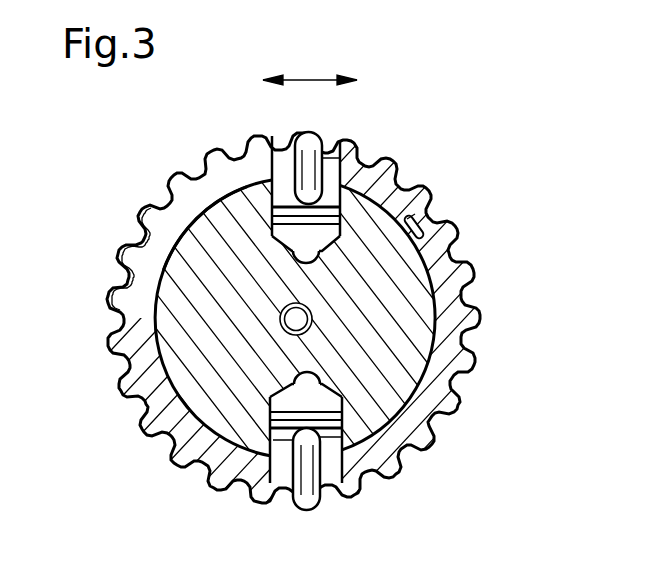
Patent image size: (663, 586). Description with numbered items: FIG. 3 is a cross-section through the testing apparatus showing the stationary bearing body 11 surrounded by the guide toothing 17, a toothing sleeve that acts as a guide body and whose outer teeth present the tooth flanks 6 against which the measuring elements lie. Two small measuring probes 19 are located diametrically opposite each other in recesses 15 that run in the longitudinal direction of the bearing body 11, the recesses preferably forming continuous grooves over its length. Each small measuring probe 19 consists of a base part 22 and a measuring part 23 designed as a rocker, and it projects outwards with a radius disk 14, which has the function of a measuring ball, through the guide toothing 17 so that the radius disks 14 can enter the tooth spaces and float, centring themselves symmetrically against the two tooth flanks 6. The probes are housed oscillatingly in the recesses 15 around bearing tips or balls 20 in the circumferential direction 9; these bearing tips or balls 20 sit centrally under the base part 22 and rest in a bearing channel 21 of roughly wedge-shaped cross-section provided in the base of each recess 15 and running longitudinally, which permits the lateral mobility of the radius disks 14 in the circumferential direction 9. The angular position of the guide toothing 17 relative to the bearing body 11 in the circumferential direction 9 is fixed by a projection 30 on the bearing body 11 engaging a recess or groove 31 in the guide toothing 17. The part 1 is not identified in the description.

The chain wheel 1 is at (105, 300).
The tooth flanks 6 is at (127, 237).
The circumferential direction 9 is at (310, 64).
The bearing body 11 is at (230, 413).
The radius disks 14 is at (303, 145).
The recesses 15 is at (318, 266).
The guide toothing 17 is at (192, 200).
The small measuring probes 19 is at (268, 253).
The bearing tips or balls 20 is at (343, 387).
The bearing channel 21 is at (326, 271).
The base part 22 is at (322, 233).
The measuring part 23 is at (341, 152).
The projection 30 is at (418, 237).
The recess or groove 31 is at (415, 214).